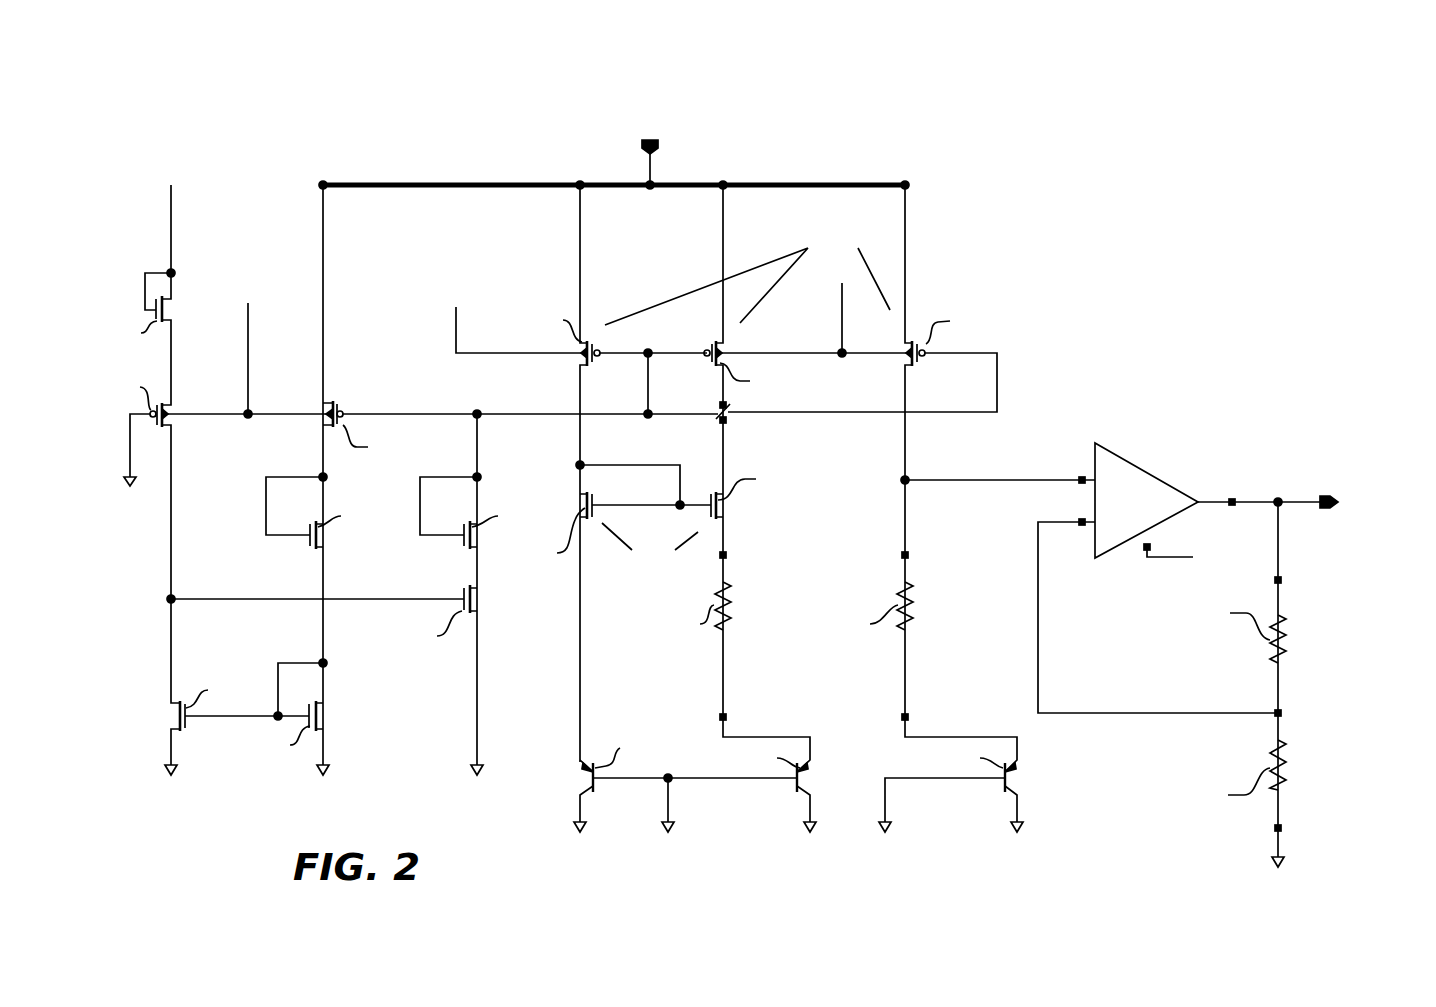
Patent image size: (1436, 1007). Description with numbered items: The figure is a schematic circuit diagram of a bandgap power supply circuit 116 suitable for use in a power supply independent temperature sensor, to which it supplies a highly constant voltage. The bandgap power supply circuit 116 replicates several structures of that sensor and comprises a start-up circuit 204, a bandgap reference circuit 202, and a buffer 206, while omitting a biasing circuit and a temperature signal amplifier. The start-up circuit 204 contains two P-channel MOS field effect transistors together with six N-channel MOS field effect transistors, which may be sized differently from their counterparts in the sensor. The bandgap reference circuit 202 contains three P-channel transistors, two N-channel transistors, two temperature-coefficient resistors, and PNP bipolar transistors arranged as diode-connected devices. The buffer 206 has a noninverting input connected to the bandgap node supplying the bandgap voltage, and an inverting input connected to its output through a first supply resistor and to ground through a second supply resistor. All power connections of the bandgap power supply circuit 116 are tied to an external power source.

The bandgap power supply circuit 116 is at (1090, 240).
The bandgap reference circuit 202 is at (347, 115).
The start-up circuit 204 is at (410, 160).
The buffer 206 is at (1140, 465).